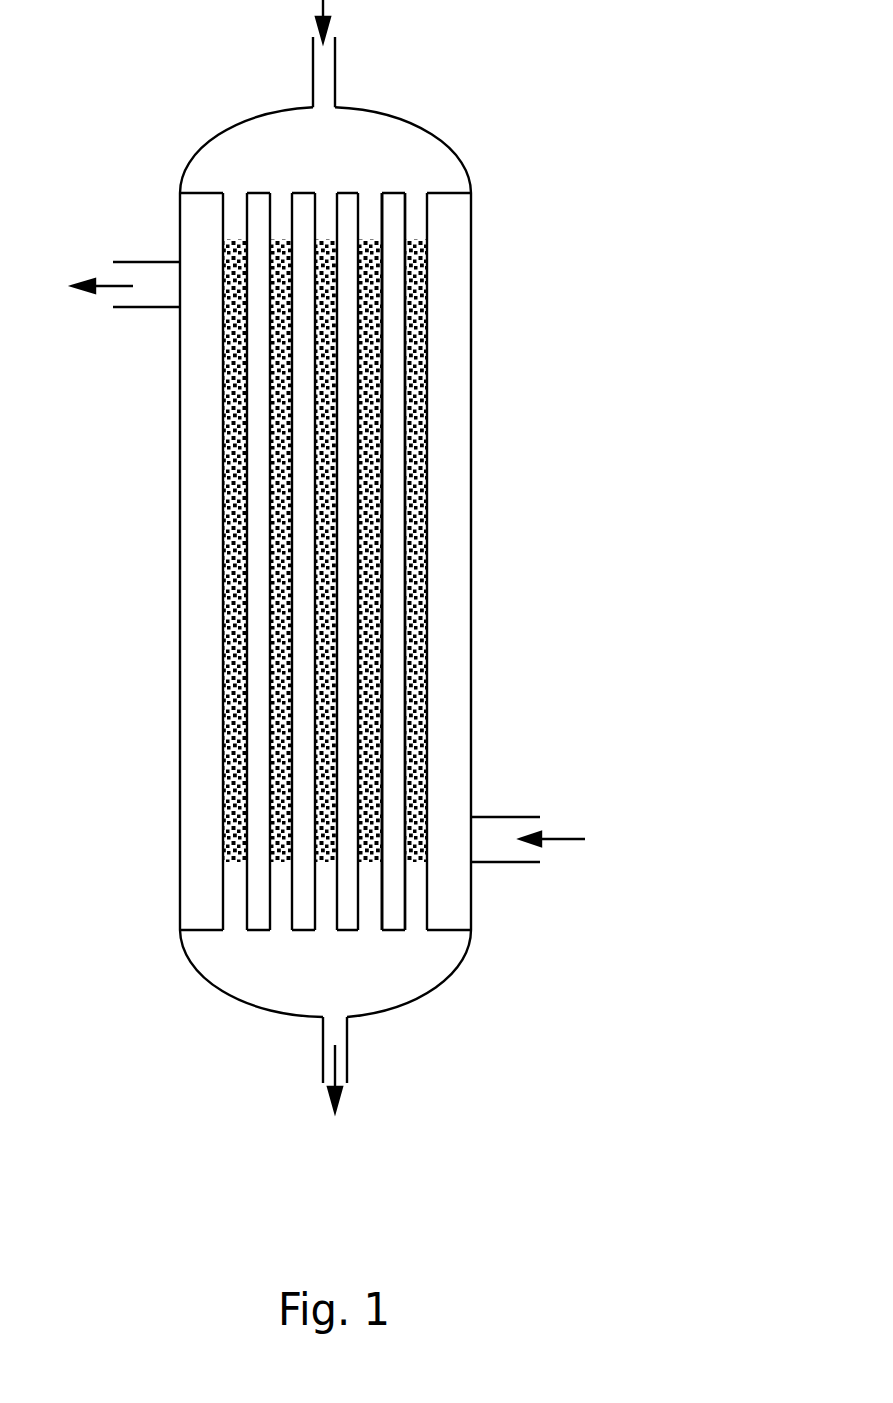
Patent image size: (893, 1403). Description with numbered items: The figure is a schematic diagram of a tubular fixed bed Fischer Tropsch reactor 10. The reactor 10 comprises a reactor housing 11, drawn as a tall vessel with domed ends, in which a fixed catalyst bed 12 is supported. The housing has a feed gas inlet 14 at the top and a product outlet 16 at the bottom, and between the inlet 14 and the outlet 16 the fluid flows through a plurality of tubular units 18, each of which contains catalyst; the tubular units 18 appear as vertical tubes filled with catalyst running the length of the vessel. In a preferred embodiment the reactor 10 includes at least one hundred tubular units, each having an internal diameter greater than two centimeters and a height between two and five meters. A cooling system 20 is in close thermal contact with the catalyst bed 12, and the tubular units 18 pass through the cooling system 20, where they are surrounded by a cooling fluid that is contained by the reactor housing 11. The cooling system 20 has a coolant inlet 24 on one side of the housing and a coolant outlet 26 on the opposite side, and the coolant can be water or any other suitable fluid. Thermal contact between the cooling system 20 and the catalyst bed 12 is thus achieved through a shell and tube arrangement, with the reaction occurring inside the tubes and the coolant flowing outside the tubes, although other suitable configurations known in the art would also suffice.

The tubular fixed bed Fischer Tropsch reactor 10 is at (403, 556).
The reactor housing 11 is at (471, 317).
The fixed catalyst bed 12 is at (370, 240).
The feed gas inlet 14 is at (336, 70).
The product outlet 16 is at (397, 1064).
The tubular units 18 is at (385, 660).
The cooling system 20 is at (392, 586).
The coolant inlet 24 is at (503, 817).
The coolant outlet 26 is at (140, 262).